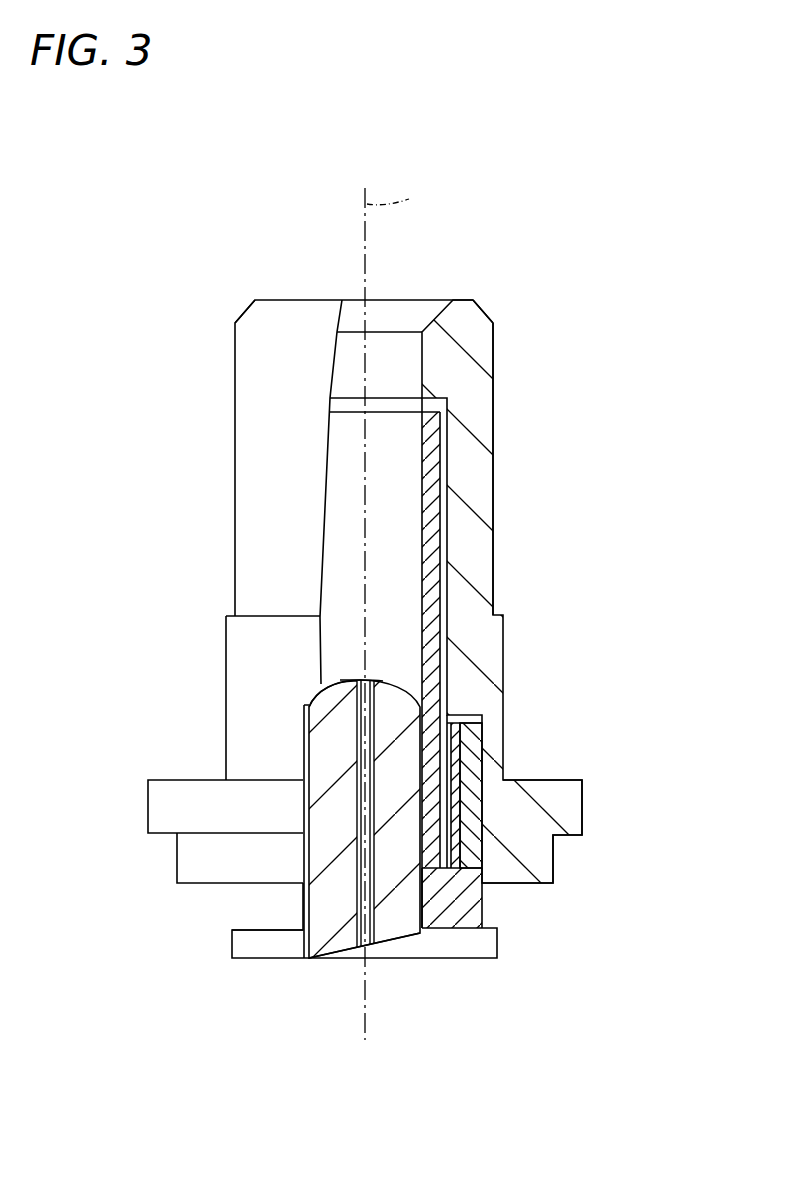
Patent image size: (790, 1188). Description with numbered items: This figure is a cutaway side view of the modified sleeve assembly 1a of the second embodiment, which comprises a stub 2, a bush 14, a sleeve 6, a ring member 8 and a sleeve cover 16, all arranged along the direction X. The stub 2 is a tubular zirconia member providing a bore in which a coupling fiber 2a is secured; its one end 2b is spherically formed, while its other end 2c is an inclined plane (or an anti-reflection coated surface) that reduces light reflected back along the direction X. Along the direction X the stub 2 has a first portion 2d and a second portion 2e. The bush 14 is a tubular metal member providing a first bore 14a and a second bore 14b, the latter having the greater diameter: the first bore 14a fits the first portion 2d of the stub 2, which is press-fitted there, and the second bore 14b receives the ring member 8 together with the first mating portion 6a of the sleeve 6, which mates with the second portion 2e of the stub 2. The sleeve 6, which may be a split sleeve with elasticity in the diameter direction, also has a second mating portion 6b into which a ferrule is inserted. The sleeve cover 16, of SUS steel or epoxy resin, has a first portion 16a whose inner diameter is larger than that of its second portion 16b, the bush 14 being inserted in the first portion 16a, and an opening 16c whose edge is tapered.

The sleeve assembly 1a is at (578, 200).
The stub 2 is at (317, 813).
The coupling fiber 2a is at (357, 677).
The one end of the stub 2b is at (352, 680).
The other end of the stub 2c is at (341, 969).
The first portion of the stub 2d is at (305, 908).
The second portion of the stub 2e is at (305, 788).
The sleeve 6 is at (486, 663).
The first mating portion 6a is at (443, 724).
The second mating portion 6b is at (429, 514).
The ring member 8 is at (451, 737).
The bush 14 is at (483, 913).
The first bore 14a is at (424, 910).
The second bore 14b is at (549, 882).
The sleeve cover 16 is at (441, 615).
The first portion of the sleeve cover 16a is at (577, 818).
The second portion of the sleeve cover 16b is at (478, 422).
The opening 16c is at (451, 333).